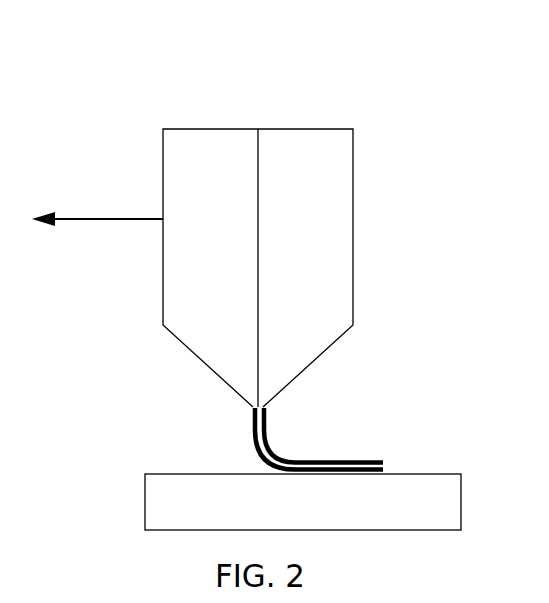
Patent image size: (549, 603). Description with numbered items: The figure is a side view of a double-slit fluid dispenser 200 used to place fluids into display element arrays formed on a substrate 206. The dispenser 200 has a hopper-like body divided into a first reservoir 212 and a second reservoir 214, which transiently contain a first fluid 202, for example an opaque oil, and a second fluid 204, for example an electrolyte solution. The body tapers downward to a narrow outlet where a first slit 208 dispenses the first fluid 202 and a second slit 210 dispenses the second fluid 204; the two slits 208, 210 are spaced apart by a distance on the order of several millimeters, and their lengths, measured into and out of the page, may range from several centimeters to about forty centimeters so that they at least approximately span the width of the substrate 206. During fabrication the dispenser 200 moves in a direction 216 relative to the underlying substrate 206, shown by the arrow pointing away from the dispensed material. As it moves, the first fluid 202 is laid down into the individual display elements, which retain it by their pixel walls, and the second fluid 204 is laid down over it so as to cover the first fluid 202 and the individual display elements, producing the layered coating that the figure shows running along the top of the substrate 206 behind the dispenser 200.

The double-slit fluid dispenser 200 is at (421, 44).
The first fluid 202 is at (256, 442).
The second fluid 204 is at (280, 453).
The substrate 206 is at (225, 511).
The first slit 208 is at (248, 400).
The second slit 210 is at (267, 398).
The first reservoir 212 is at (225, 255).
The second reservoir 214 is at (327, 255).
The direction 216 is at (110, 219).